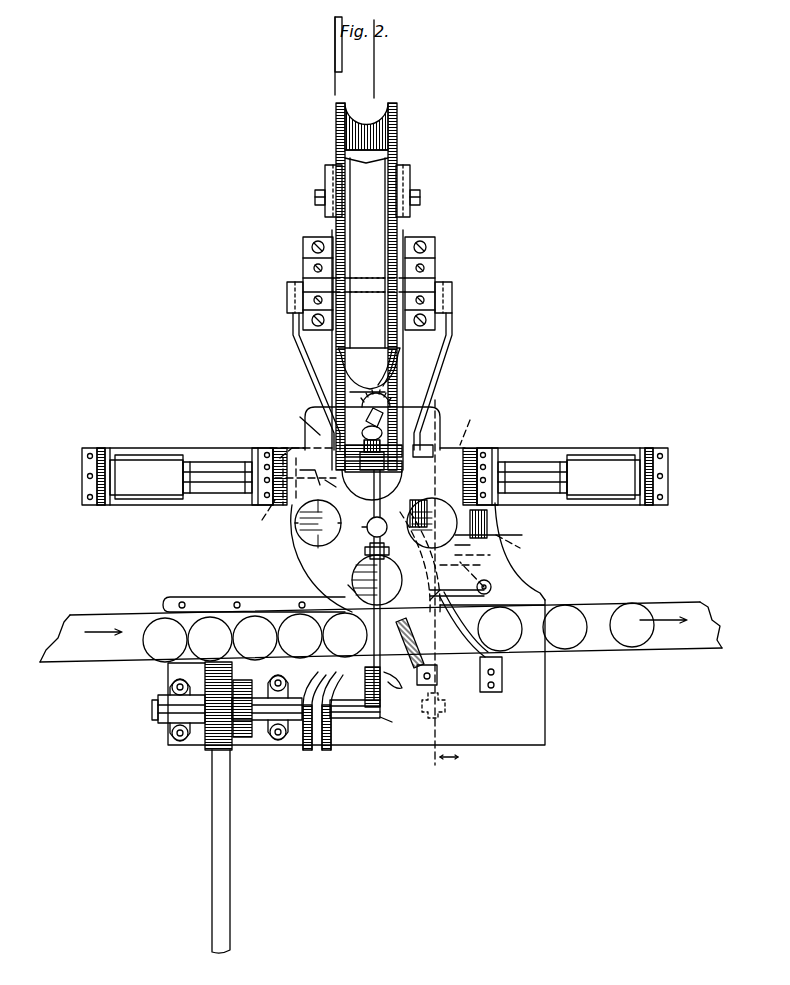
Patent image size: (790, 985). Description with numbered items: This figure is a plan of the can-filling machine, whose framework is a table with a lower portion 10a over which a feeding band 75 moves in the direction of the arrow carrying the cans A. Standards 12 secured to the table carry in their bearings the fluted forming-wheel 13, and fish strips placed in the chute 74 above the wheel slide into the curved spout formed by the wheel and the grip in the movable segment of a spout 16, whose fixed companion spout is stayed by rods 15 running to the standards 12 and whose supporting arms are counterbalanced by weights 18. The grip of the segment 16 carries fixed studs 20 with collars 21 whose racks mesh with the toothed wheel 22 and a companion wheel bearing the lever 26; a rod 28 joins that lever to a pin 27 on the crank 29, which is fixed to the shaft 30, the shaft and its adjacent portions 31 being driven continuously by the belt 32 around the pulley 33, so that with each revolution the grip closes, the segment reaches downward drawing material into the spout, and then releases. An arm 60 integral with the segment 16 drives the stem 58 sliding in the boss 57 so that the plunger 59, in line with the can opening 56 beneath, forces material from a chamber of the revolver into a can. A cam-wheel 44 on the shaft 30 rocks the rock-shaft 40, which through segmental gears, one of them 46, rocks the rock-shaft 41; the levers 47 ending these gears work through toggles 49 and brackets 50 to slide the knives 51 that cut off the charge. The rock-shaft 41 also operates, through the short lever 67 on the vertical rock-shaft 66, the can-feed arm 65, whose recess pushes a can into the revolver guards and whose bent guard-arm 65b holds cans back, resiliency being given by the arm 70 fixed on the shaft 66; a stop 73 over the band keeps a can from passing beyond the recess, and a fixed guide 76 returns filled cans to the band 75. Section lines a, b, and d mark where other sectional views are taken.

The fluted forming-wheel 13 is at (366, 133).
The weights 18 is at (325, 188).
The chute 74 is at (372, 212).
The standards 12 is at (303, 261).
The rods 15 is at (302, 362).
The segment of a spout 16 is at (369, 370).
The collars 21 is at (392, 407).
The fixed studs 20 is at (384, 432).
The levers 47 is at (377, 465).
The brackets 50 is at (283, 455).
The toothed wheel 22 is at (304, 419).
The toggles 49 is at (375, 474).
The knives 51 is at (336, 475).
The segmental gear 46 is at (222, 485).
The lever 26 is at (380, 502).
The arm 60 is at (432, 498).
The boss 57 is at (524, 540).
The rock-shaft 41 is at (490, 546).
The rod 28 is at (365, 551).
The roller 56 is at (318, 548).
The arm 65 is at (356, 572).
The guard-arm 65b is at (349, 587).
The stem 58 is at (420, 562).
The plunger 59 is at (457, 579).
The short lever 67 is at (482, 573).
The vertical rock-shaft 66 is at (505, 585).
The rock-shaft 40 is at (312, 578).
The arm 70 is at (491, 588).
The band 75 is at (381, 632).
The stop 73 is at (420, 668).
The fixed guide 76 is at (480, 668).
The pulley 33 is at (230, 706).
The shaft 31 is at (230, 708).
The shaft 30 is at (155, 718).
The pin 27 is at (396, 688).
The crank 29 is at (395, 725).
The cam-wheel 44 is at (341, 708).
The table 10a is at (356, 672).
The belt 32 is at (233, 851).
The section line a a is at (503, 651).
The section line b b is at (440, 526).
The section line d d is at (451, 573).
The cans A is at (398, 632).